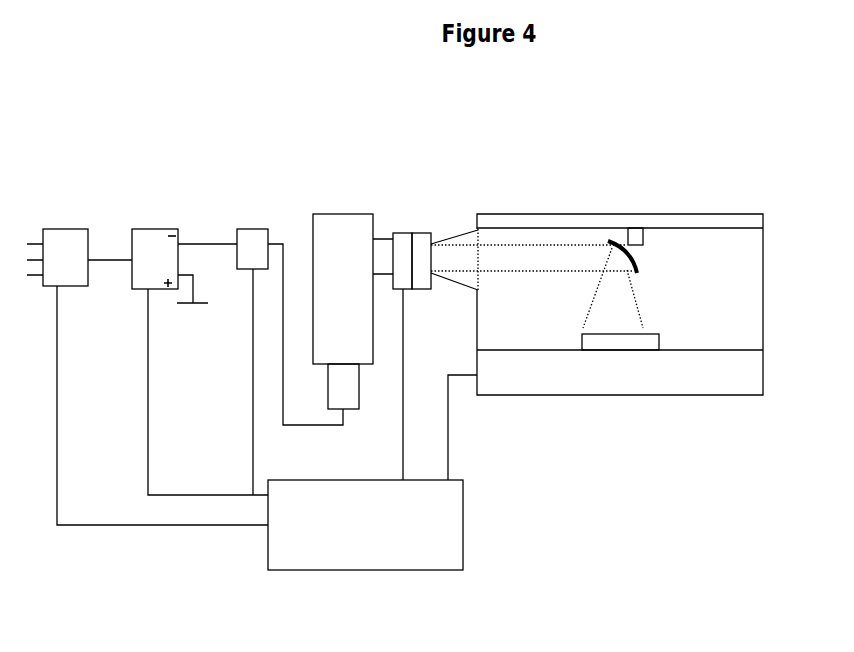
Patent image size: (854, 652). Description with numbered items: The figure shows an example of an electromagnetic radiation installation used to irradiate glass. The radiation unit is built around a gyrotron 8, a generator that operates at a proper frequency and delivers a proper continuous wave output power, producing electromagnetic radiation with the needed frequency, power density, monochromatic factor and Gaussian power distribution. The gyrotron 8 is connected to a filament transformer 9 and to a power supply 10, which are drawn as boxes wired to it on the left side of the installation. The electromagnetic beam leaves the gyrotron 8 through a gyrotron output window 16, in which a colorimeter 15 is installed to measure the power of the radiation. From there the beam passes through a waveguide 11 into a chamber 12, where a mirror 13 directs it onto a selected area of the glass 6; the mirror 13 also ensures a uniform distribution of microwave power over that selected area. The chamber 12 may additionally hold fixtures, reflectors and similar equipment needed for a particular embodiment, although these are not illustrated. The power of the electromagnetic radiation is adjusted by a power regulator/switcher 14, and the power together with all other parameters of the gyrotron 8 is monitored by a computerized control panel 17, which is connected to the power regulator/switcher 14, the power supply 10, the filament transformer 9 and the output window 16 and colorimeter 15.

The power regulator/switcher 14 is at (57, 222).
The power supply 10 is at (148, 222).
The filament transformer 9 is at (254, 222).
The gyrotron 8 is at (329, 207).
The gyrotron output window 16 is at (397, 232).
The colorimeter 15 is at (418, 232).
The waveguide 11 is at (477, 230).
The chamber 12 is at (473, 313).
The mirror 13 is at (608, 242).
The glass 6 is at (660, 335).
The computerized control panel 17 is at (268, 549).